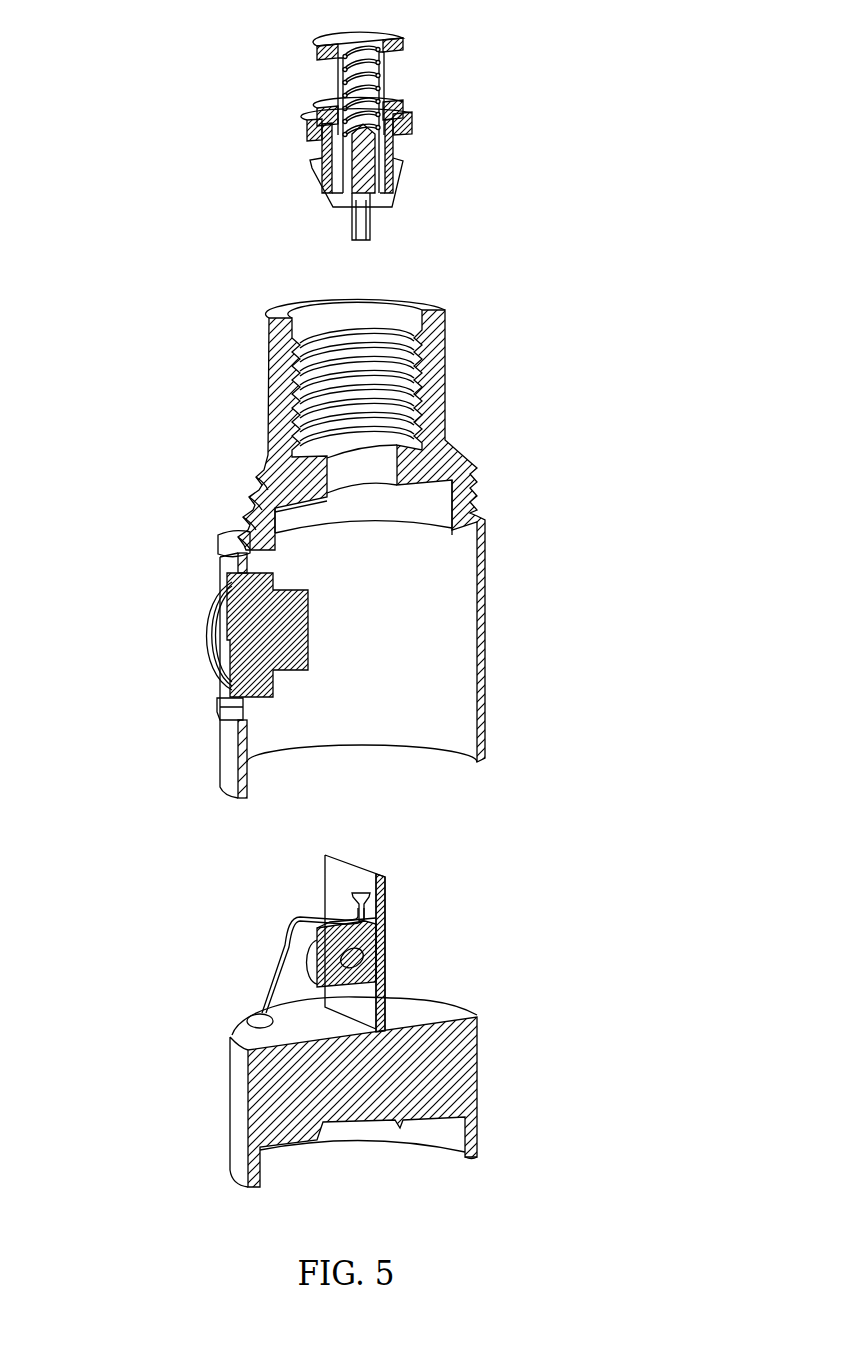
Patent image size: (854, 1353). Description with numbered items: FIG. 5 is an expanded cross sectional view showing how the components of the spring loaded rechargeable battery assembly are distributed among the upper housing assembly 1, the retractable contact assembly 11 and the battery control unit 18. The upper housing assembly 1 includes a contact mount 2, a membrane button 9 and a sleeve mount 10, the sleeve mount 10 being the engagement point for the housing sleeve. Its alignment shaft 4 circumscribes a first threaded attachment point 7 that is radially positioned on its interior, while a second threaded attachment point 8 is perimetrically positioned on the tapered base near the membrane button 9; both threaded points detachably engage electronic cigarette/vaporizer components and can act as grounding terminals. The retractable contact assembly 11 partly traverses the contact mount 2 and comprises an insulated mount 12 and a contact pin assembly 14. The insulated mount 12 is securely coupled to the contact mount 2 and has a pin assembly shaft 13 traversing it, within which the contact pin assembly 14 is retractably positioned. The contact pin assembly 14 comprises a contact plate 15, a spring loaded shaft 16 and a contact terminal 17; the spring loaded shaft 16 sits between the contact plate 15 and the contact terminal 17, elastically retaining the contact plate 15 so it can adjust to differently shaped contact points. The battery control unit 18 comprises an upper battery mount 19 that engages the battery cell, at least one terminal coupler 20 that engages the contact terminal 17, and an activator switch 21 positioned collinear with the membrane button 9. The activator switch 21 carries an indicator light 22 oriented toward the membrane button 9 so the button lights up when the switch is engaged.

The upper housing assembly 1 is at (381, 548).
The contact mount 2 is at (402, 443).
The alignment shaft 4 is at (270, 338).
The first threaded attachment point 7 is at (300, 395).
The second threaded attachment point 8 is at (472, 494).
The membrane button 9 is at (201, 626).
The sleeve mount 10 is at (219, 743).
The retractable contact assembly 11 is at (452, 127).
The insulated mount 12 is at (335, 151).
The pin assembly shaft 13 is at (400, 143).
The contact pin assembly 14 is at (420, 47).
The contact plate 15 is at (320, 40).
The spring loaded shaft 16 is at (330, 88).
The contact terminal 17 is at (393, 177).
The battery control unit 18 is at (269, 1051).
The upper battery mount 19 is at (424, 1170).
The terminal coupler 20 is at (292, 921).
The activator switch 21 is at (292, 976).
The indicator light 22 is at (340, 948).